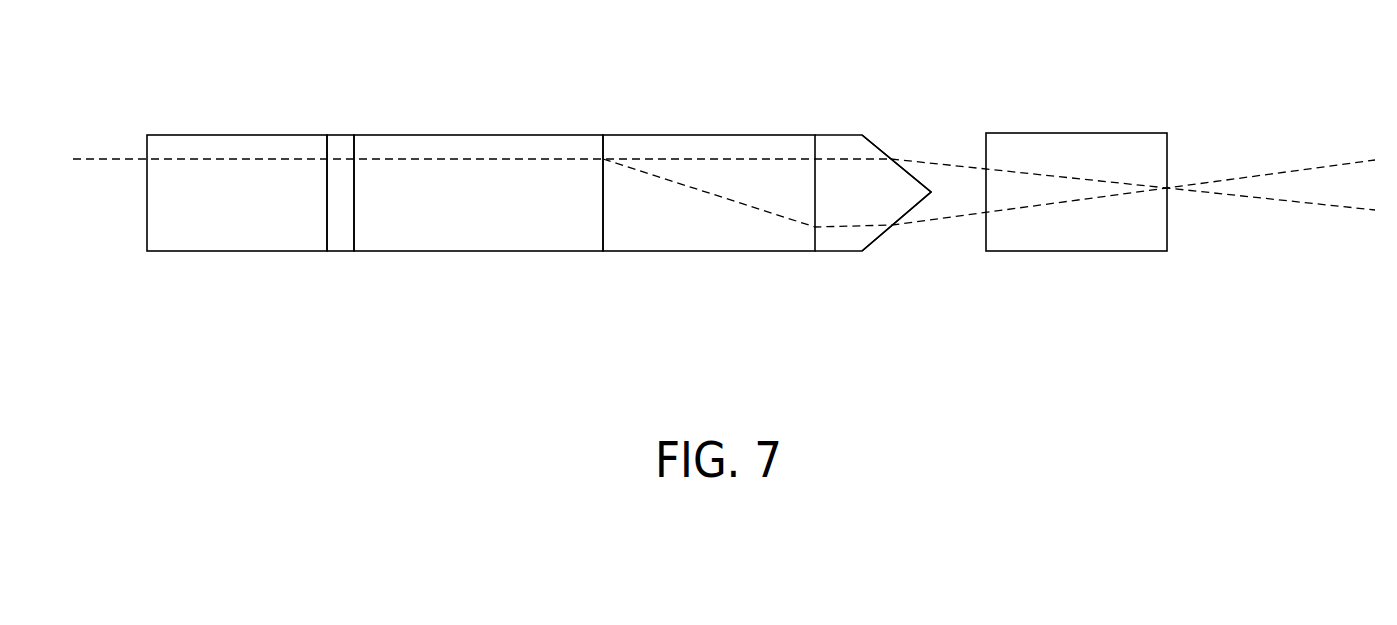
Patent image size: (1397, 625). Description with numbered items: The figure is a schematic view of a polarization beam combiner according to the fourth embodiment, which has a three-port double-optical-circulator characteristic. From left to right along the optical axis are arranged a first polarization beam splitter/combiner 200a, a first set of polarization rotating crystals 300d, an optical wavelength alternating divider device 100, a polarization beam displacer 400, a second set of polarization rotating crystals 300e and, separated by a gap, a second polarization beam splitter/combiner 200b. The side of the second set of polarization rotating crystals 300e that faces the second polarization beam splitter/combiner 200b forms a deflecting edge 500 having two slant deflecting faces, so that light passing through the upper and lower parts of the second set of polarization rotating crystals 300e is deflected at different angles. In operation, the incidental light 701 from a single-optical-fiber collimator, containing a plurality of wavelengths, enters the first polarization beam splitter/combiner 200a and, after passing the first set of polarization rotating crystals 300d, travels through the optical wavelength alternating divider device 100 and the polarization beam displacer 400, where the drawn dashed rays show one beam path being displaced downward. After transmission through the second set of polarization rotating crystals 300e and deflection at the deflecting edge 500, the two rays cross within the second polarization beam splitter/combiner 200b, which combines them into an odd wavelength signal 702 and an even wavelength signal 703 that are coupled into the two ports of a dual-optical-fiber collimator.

The optical wavelength alternating divider device 100 is at (472, 133).
The first polarization beam splitter/combiner 200a is at (233, 133).
The second polarization beam splitter/combiner 200b is at (1063, 132).
The first set of polarization rotating crystals 300d is at (342, 253).
The second set of polarization rotating crystals 300e is at (840, 133).
The polarization beam displacer 400 is at (708, 133).
The deflecting edge 500 is at (873, 240).
The incidental light 701 is at (90, 159).
The odd wavelength signal 702 is at (1310, 166).
The even wavelength signal 703 is at (1313, 208).